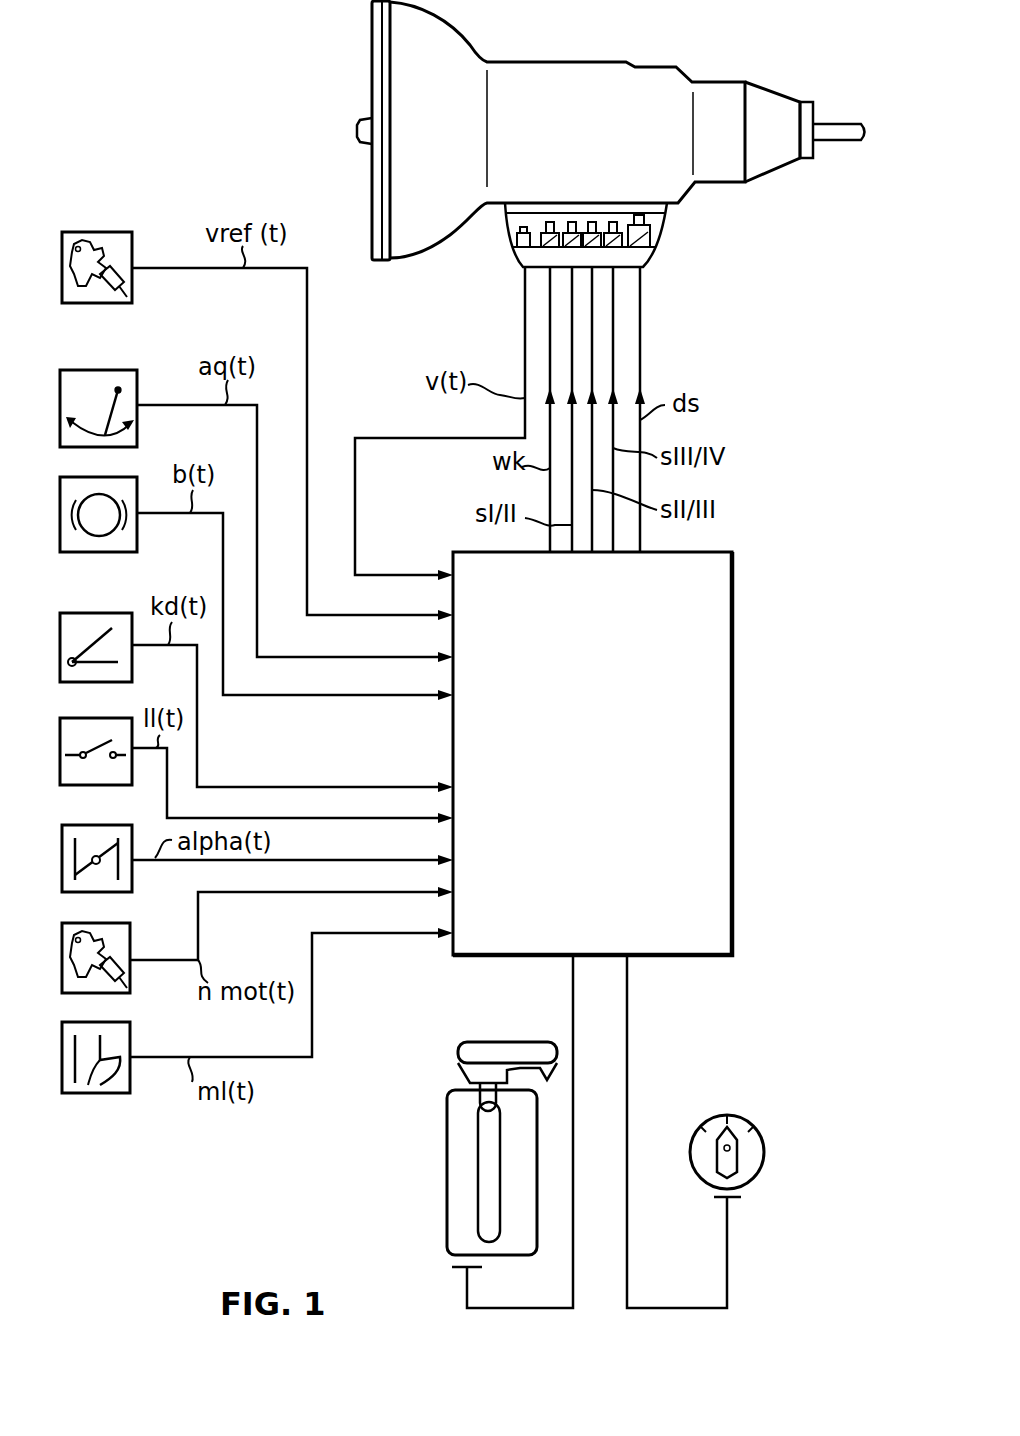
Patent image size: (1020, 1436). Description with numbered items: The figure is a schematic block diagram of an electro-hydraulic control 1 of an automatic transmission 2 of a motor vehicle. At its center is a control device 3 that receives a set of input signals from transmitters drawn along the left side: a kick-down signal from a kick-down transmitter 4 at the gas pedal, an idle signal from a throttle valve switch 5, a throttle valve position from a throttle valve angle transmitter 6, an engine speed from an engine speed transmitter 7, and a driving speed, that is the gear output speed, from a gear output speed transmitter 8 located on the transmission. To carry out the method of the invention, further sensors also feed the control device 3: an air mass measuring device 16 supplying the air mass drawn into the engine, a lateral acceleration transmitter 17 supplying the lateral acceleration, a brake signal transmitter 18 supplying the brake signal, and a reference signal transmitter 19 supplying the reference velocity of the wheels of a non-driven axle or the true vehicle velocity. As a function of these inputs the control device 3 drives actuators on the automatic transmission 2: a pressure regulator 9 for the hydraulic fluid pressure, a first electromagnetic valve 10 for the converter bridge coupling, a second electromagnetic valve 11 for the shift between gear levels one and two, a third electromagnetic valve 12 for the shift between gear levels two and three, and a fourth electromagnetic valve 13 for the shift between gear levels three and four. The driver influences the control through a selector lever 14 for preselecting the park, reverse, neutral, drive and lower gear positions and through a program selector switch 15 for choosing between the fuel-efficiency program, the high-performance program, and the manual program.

The electro-hydraulic control 1 is at (777, 70).
The automatic transmission 2 is at (562, 62).
The control device 3 is at (733, 588).
The kick-down transmitter 4 is at (132, 672).
The throttle valve switch 5 is at (132, 775).
The throttle valve angle transmitter 6 is at (132, 880).
The engine speed transmitter 7 is at (130, 985).
The gear output speed transmitter 8 is at (512, 242).
The pressure regulator 9 is at (648, 234).
The first electromagnetic valve 10 is at (550, 248).
The second electromagnetic valve 11 is at (572, 248).
The third electromagnetic valve 12 is at (594, 248).
The fourth electromagnetic valve 13 is at (622, 246).
The selector lever 14 is at (447, 1165).
The program selector switch 15 is at (690, 1165).
The air mass measuring device 16 is at (110, 1093).
The lateral acceleration transmitter 17 is at (137, 395).
The brake signal transmitter 18 is at (137, 535).
The reference signal transmitter 19 is at (132, 283).